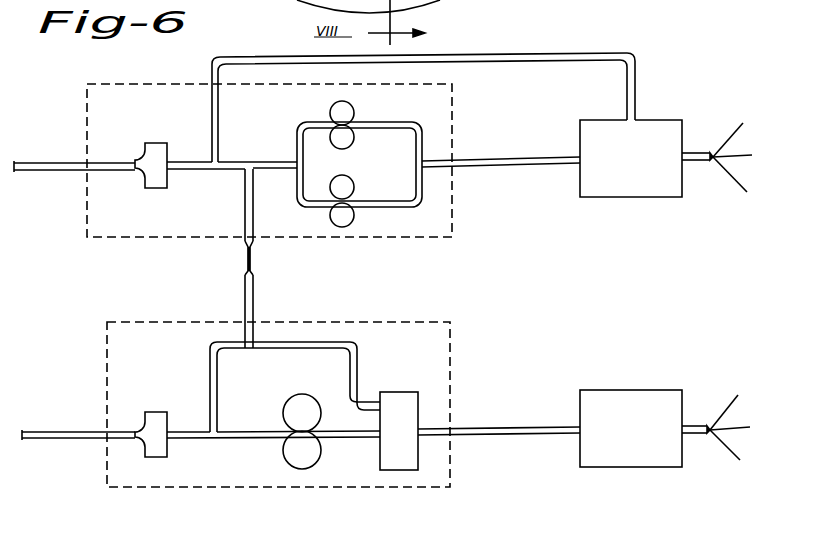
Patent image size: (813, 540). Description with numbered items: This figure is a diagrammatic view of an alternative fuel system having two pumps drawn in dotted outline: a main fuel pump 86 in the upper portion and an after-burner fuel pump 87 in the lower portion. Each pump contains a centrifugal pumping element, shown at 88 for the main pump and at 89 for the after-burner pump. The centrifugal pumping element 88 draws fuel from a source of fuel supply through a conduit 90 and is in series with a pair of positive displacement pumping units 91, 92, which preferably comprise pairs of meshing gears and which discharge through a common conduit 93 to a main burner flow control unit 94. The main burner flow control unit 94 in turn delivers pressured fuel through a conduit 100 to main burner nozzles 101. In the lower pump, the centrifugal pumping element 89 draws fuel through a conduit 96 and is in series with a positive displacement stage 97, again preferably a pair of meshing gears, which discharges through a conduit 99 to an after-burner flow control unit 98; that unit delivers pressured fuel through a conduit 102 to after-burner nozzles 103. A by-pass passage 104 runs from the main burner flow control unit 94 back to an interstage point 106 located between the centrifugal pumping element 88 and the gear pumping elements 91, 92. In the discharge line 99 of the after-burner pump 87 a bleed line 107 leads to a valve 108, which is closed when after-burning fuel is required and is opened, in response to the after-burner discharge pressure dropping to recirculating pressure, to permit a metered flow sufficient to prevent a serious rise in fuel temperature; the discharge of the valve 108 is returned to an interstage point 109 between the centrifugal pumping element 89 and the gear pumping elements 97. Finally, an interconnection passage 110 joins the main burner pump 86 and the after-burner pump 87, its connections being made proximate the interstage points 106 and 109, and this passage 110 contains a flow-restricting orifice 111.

The main fuel pump 86 is at (172, 237).
The after-burner fuel pump 87 is at (172, 320).
The centrifugal pumping element 88 is at (155, 172).
The centrifugal pumping element 89 is at (158, 418).
The conduit 90 is at (61, 162).
The positive displacement pumping unit 91 is at (342, 215).
The positive displacement pumping unit 92 is at (342, 113).
The common conduit 93 is at (493, 157).
The main burner flow control unit 94 is at (624, 198).
The conduit 96 is at (72, 440).
The positive displacement stage 97 is at (302, 450).
The after-burner flow control unit 98 is at (624, 390).
The conduit 99 is at (509, 428).
The conduit 100 is at (692, 161).
The main burner nozzles 101 is at (712, 160).
The conduit 102 is at (697, 426).
The after-burner nozzles 103 is at (706, 434).
The by-pass passage 104 is at (517, 55).
The interstage point 106 is at (222, 158).
The bleed line 107 is at (343, 341).
The valve 108 is at (393, 455).
The interstage point 109 is at (223, 430).
The interconnection passage 110 is at (253, 292).
The flow-restricting orifice 111 is at (250, 262).